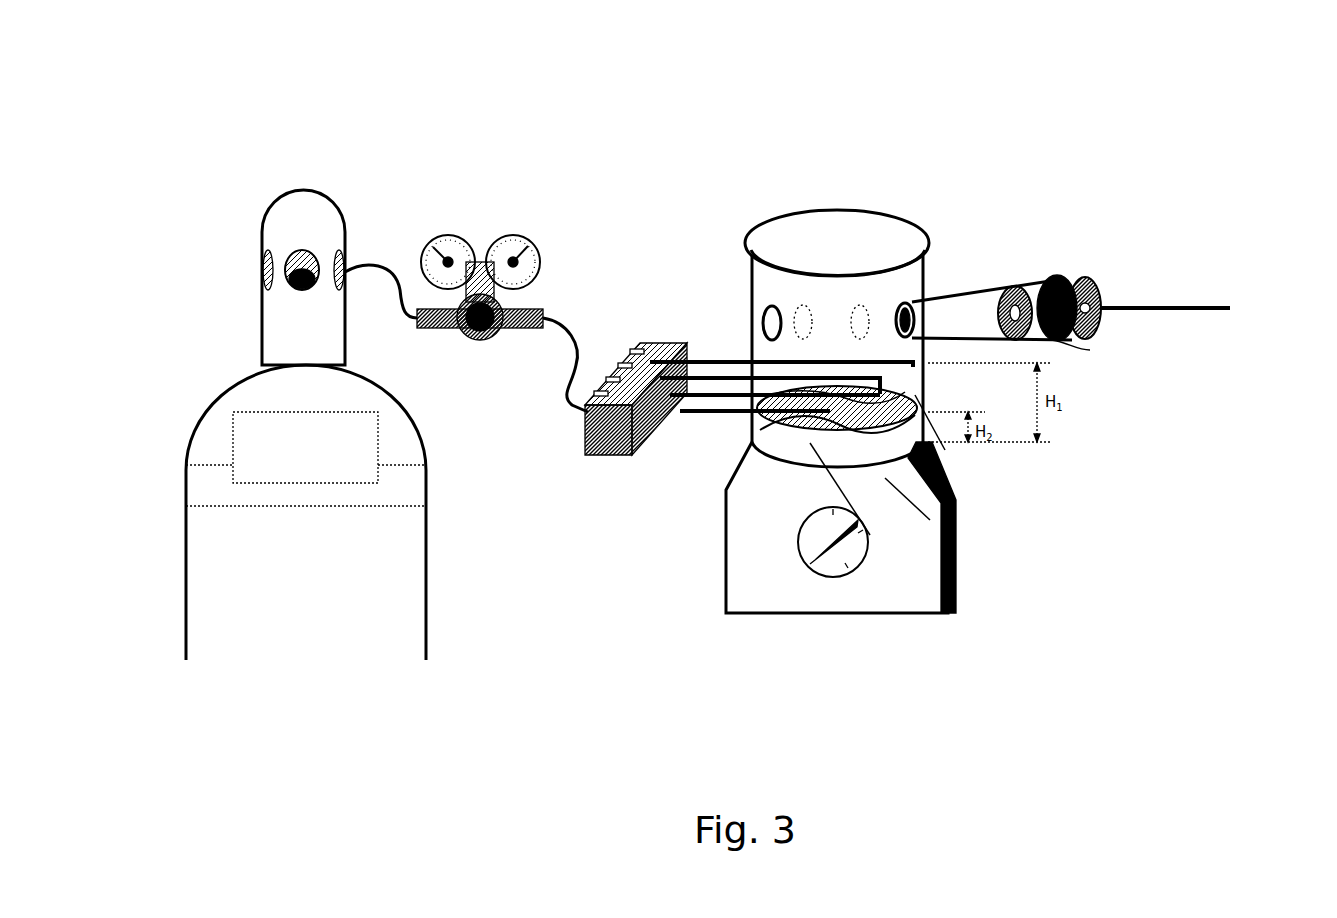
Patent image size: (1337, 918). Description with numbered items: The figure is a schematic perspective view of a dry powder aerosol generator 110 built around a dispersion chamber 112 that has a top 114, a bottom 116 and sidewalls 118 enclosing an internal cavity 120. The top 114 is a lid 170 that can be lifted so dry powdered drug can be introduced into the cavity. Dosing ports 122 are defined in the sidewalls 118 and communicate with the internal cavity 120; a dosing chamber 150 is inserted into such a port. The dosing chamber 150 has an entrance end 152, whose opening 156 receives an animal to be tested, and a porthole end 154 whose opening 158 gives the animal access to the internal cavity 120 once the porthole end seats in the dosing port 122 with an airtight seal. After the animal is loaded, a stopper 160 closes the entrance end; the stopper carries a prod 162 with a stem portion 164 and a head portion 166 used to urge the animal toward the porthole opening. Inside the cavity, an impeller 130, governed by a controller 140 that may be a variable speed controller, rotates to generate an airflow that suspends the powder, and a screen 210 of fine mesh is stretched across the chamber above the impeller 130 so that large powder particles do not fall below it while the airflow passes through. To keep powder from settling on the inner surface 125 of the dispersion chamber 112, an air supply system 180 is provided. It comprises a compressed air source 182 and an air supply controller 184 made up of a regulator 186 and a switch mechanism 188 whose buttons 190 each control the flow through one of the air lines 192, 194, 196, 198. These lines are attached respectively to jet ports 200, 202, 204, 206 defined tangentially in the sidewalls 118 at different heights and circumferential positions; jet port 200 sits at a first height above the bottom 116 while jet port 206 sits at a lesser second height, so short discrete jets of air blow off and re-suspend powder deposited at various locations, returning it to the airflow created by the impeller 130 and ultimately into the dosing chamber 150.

The dry powder aerosol generator 110 is at (540, 172).
The dispersion chamber 112 is at (930, 240).
The top 114 is at (772, 232).
The bottom 116 is at (790, 445).
The sidewalls 118 is at (908, 300).
The internal cavity 120 is at (832, 350).
The dosing ports 122 is at (750, 314).
The inner surface 125 is at (748, 425).
The impeller 130 is at (767, 445).
The controller 140 is at (738, 568).
The dosing chambers 150 is at (985, 278).
The entrance end 152 is at (1084, 283).
The porthole end 154 is at (928, 300).
The opening 156 is at (1066, 276).
The opening 158 is at (942, 300).
The stopper 160 is at (1112, 288).
The prod 162 is at (1165, 298).
The stem portion 164 is at (1225, 306).
The head portion 166 is at (1090, 350).
The lid 170 is at (847, 208).
The air supply system 180 is at (256, 196).
The compressed air source 182 is at (215, 400).
The air supply controller 184 is at (533, 384).
The regulator 186 is at (480, 250).
The switch mechanism 188 is at (608, 452).
The buttons 190 is at (655, 348).
The air line 192 is at (700, 358).
The air line 194 is at (690, 375).
The air line 196 is at (724, 400).
The air line 198 is at (676, 416).
The jet port 200 is at (945, 450).
The jet port 202 is at (930, 520).
The jet port 204 is at (957, 582).
The jet port 206 is at (870, 535).
The screen 210 is at (840, 578).